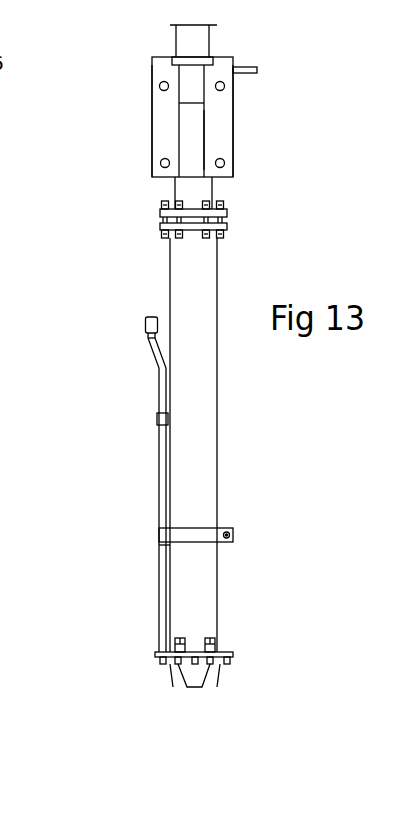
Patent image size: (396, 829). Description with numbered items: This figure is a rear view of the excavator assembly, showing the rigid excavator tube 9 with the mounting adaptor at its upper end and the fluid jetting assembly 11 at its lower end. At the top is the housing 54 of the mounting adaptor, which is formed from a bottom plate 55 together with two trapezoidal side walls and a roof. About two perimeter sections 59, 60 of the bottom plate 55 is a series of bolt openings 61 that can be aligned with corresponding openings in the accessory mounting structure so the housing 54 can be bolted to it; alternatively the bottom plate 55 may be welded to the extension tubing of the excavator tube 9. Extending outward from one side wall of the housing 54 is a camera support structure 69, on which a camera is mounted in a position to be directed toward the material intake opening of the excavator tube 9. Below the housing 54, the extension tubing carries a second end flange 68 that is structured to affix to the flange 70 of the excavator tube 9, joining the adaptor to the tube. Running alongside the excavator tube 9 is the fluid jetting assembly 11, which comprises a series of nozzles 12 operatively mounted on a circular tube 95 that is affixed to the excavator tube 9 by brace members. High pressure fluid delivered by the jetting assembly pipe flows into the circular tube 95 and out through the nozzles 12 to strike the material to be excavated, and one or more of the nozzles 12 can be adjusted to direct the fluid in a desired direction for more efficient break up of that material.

The housing 54 is at (147, 54).
The bottom plate 55 is at (223, 118).
The perimeter section 59 is at (152, 125).
The perimeter section 60 is at (233, 140).
The bolt openings 61 is at (160, 84).
The camera support structure 69 is at (256, 67).
The second end flange 68 is at (228, 212).
The flange 70 is at (229, 228).
The excavator tube 9 is at (221, 446).
The fluid jetting assembly 11 is at (158, 397).
The circular tube 95 is at (157, 652).
The nozzles 12 is at (160, 661).